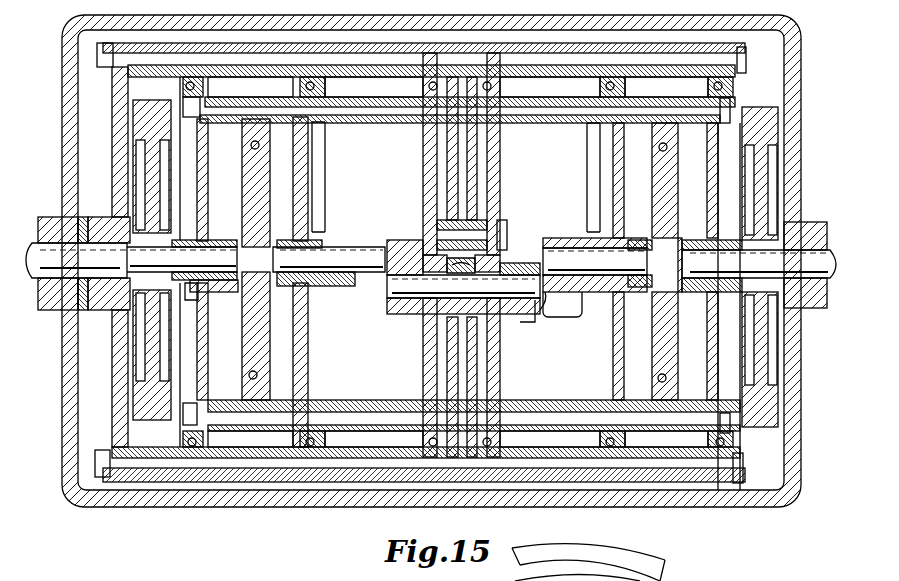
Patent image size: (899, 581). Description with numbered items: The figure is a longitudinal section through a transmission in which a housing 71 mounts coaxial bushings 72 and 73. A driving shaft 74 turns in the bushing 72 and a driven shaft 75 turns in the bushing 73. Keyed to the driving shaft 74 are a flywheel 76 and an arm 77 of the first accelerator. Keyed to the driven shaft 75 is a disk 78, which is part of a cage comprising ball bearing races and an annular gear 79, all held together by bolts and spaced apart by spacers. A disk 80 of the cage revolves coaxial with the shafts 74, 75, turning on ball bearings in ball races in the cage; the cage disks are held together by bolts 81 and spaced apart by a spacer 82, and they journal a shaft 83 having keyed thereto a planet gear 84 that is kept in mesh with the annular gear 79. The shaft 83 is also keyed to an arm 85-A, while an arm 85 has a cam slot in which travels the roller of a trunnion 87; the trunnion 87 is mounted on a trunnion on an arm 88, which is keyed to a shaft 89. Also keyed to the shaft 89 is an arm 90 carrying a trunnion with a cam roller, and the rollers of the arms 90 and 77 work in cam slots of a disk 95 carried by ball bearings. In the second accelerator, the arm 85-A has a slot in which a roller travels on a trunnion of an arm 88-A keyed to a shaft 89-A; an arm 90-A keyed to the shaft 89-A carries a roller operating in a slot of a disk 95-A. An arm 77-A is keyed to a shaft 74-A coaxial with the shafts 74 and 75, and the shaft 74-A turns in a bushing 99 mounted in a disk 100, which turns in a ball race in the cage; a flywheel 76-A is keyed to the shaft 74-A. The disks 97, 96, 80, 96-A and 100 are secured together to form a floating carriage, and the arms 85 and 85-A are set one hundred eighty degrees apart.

The housing 71 is at (794, 75).
The bushing 72 is at (804, 298).
The bushing 73 is at (58, 232).
The driving shaft 74 is at (806, 266).
The driven shaft 75 is at (54, 312).
The flywheel 76 is at (766, 126).
The flywheel 76-A is at (148, 124).
The arm 77 is at (700, 242).
The arm 77-A is at (224, 245).
The disk 78 is at (116, 172).
The annular gear 79 is at (466, 392).
The disk 80 is at (498, 154).
The bolts 81 is at (505, 235).
The spacer 82 is at (497, 214).
The shaft 83 is at (530, 306).
The planet gear 84 is at (460, 265).
The arm 85 is at (517, 300).
The arm 85-A is at (412, 312).
The trunnion 87 is at (546, 312).
The arm 88 is at (566, 312).
The arm 88-A is at (362, 290).
The shaft 89 is at (560, 262).
The shaft 89-A is at (335, 260).
The arm 90 is at (638, 240).
The arm 90-A is at (300, 218).
The disk 95 is at (653, 184).
The disk 95-A is at (306, 153).
The disk 96 is at (606, 166).
The disk 96-A is at (305, 180).
The disk 97 is at (710, 180).
The bushing 99 is at (196, 300).
The disk 100 is at (202, 195).
The shaft 74-A is at (227, 292).